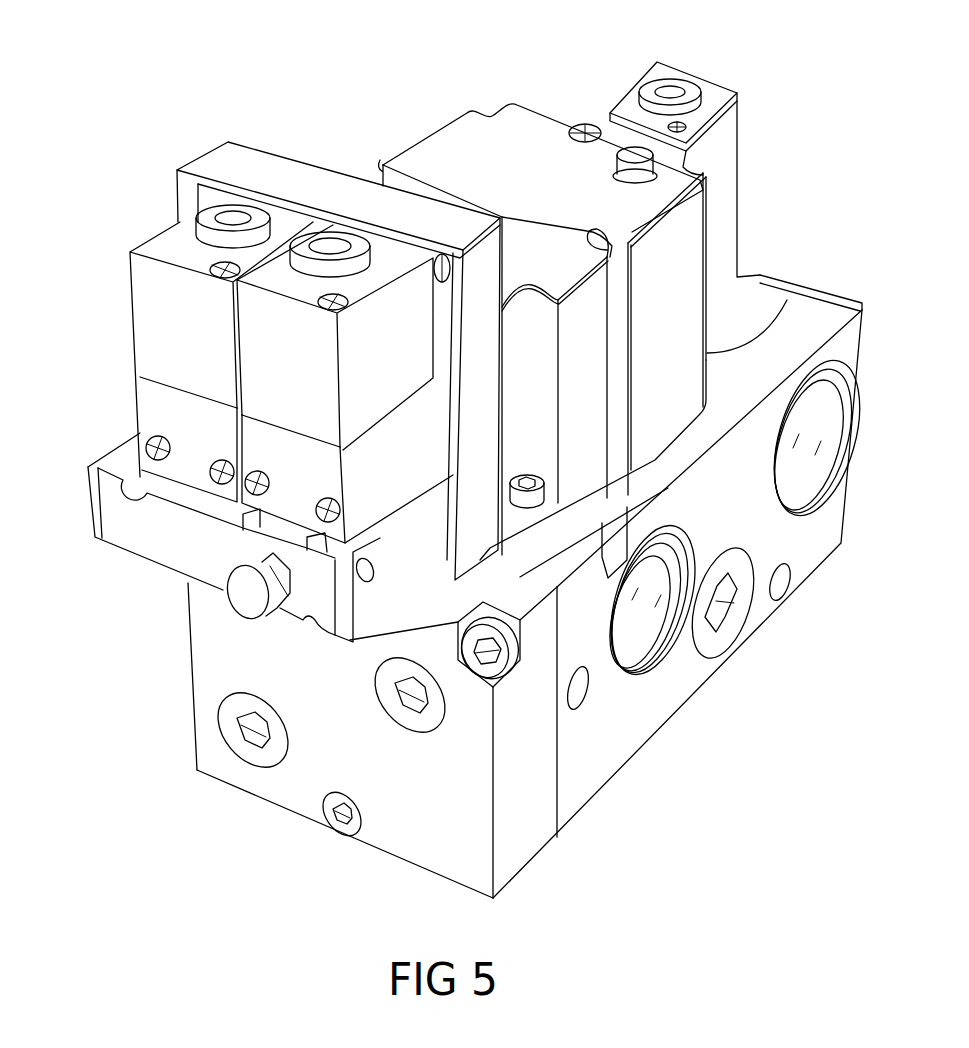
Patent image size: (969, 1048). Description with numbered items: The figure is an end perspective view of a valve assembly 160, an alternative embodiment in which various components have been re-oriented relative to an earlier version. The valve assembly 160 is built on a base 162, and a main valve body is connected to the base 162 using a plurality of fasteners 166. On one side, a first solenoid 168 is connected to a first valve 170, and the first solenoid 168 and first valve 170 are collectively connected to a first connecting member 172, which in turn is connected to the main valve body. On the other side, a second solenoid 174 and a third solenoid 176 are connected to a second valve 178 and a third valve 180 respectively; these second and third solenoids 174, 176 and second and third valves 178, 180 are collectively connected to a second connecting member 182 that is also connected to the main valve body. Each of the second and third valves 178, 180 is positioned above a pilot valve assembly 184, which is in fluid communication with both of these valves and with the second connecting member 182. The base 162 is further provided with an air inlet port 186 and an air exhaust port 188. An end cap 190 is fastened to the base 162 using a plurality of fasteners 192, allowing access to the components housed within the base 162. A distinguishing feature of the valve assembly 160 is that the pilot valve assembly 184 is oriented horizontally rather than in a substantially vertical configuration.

The valve assembly 160 is at (741, 56).
The base 162 is at (648, 723).
The fasteners 166 is at (762, 322).
The first solenoid 168 is at (717, 172).
The first valve 170 is at (718, 268).
The first connecting member 172 is at (612, 120).
The second solenoid 174 is at (267, 356).
The third solenoid 176 is at (160, 330).
The second valve 178 is at (268, 515).
The third valve 180 is at (160, 420).
The second connecting member 182 is at (278, 178).
The pilot valve assembly 184 is at (130, 533).
The air inlet port 186 is at (728, 603).
The air exhaust port 188 is at (652, 635).
The end cap 190 is at (432, 854).
The fasteners 192 is at (530, 660).